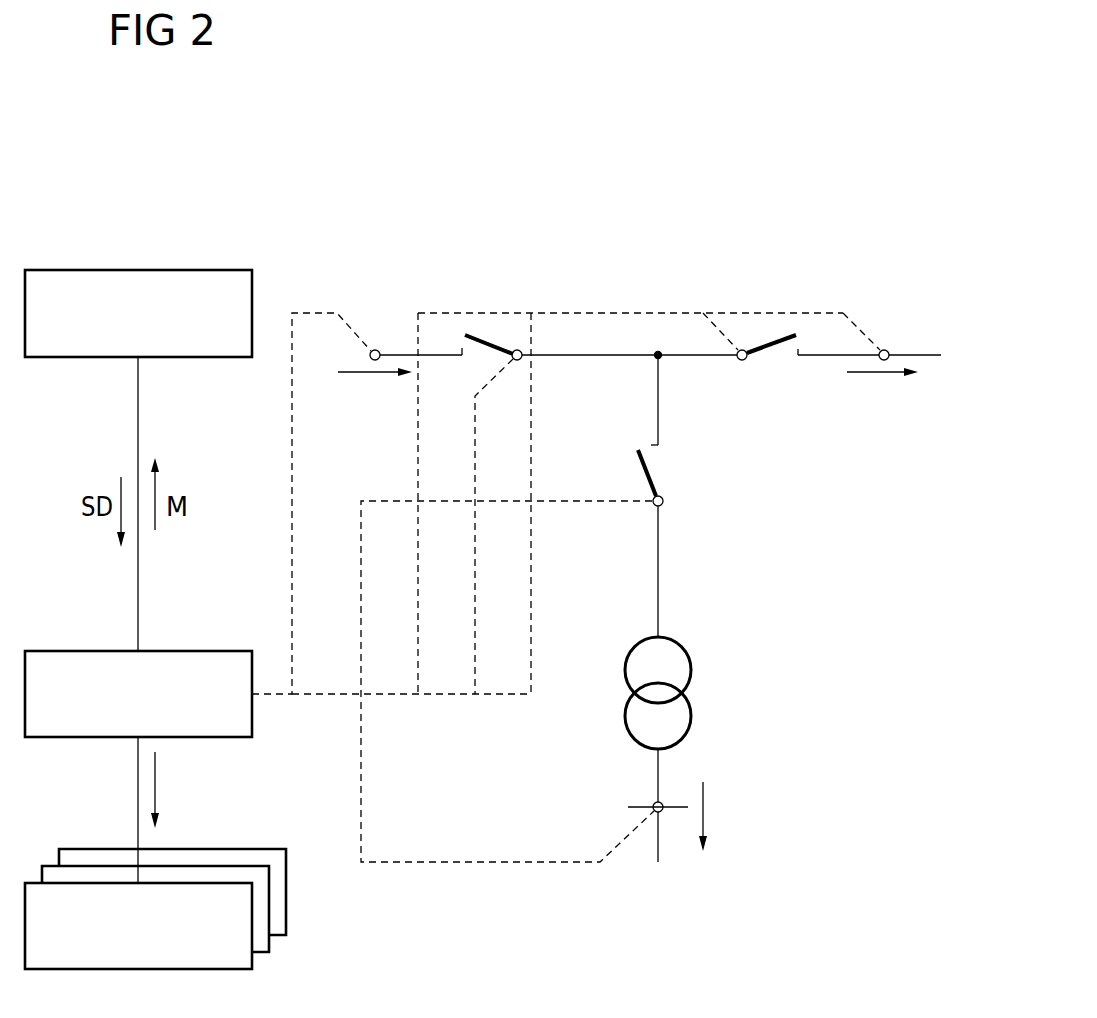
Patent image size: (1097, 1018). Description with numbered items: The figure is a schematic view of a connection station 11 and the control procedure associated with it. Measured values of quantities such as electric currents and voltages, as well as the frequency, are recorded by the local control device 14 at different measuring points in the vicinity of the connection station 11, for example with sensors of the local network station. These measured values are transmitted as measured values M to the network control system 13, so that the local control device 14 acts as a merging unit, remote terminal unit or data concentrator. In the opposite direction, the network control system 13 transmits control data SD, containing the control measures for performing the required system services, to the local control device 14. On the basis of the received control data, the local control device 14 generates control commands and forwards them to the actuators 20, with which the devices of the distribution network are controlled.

The connection station 11 is at (648, 275).
The network control system 13 is at (195, 270).
The local control device 14 is at (195, 651).
The actuators 20 is at (310, 903).